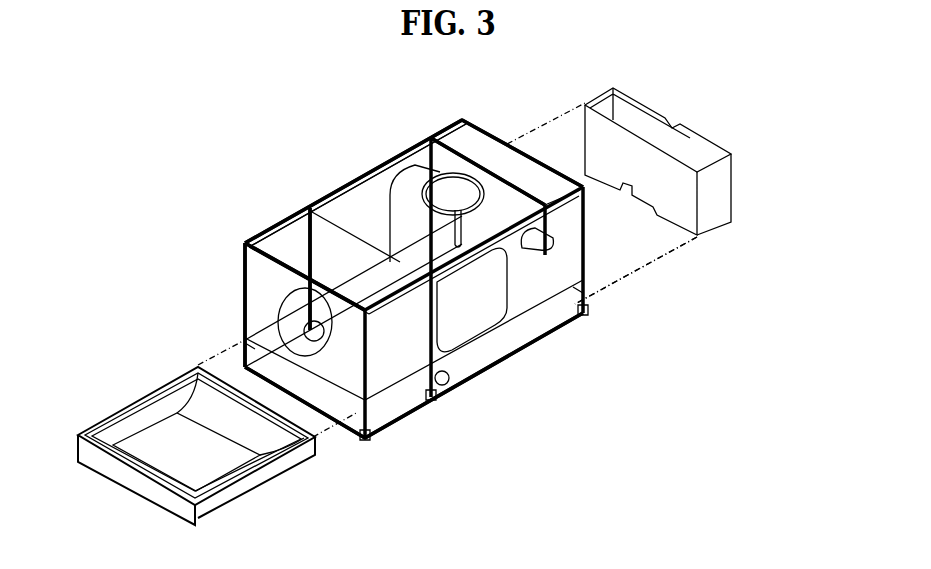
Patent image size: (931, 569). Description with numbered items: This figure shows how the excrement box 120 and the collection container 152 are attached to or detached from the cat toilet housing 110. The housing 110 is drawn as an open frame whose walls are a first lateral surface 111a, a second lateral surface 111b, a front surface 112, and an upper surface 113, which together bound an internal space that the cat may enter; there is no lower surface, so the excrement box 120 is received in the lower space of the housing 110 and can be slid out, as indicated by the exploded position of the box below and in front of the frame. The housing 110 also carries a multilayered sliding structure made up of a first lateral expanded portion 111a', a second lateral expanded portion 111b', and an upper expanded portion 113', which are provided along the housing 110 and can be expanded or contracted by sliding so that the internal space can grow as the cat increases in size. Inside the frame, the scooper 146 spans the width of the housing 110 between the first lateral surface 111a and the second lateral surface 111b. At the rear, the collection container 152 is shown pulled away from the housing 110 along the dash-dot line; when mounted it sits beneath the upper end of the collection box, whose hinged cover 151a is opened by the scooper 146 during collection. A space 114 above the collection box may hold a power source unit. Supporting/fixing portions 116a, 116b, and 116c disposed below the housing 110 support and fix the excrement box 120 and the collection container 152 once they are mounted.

The housing 110 is at (458, 398).
The front surface 112 is at (240, 283).
The upper surface 113 is at (353, 181).
The upper expanded portion 113' is at (295, 250).
The first lateral surface 111a is at (357, 182).
The first lateral expanded portion 111a' is at (284, 251).
The space 114 is at (458, 124).
The second lateral surface 111b is at (474, 375).
The second lateral expanded portion 111b' is at (346, 425).
The supporting/fixing portion 116a is at (367, 441).
The supporting/fixing portion 116b is at (432, 402).
The supporting/fixing portion 116c is at (584, 318).
The scooper 146 is at (452, 380).
The cover 151a is at (600, 298).
The collection container 152 is at (720, 187).
The excrement box 120 is at (170, 505).